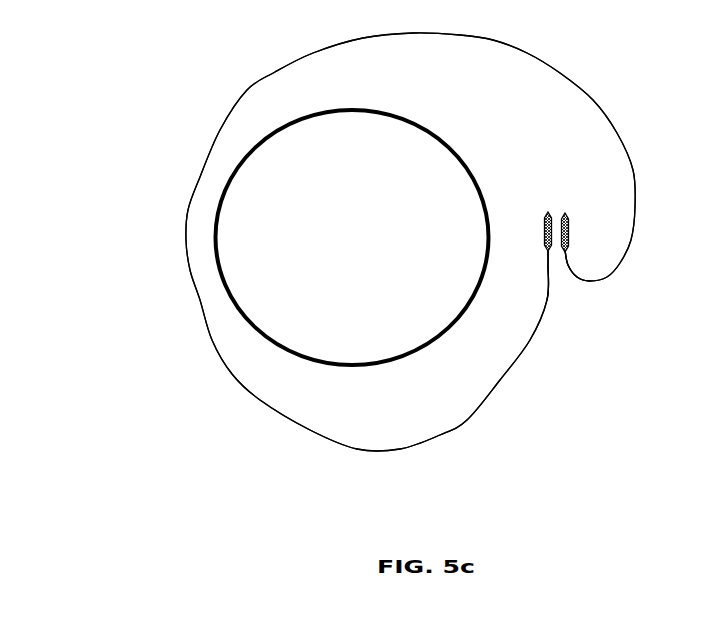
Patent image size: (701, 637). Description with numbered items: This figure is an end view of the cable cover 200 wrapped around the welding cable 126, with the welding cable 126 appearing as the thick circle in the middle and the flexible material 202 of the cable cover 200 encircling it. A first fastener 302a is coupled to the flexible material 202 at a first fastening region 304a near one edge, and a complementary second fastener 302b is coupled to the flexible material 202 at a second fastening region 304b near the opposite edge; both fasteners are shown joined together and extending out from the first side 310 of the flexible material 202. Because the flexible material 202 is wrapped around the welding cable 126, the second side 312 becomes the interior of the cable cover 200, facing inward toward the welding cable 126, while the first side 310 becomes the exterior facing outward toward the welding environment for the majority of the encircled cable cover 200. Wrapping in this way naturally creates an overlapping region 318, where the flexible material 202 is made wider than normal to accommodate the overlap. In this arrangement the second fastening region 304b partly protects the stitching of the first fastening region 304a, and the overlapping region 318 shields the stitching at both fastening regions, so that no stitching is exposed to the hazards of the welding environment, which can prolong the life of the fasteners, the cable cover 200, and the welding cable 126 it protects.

The cable cover 200 is at (178, 156).
The welding cable 126 is at (352, 237).
The first side 310 is at (247, 88).
The second side 312 is at (360, 447).
The flexible material 202 is at (232, 374).
The overlapping region 318 is at (640, 247).
The first fastener 302a is at (543, 232).
The second fastener 302b is at (570, 235).
The first fastening region 304a is at (538, 243).
The second fastening region 304b is at (583, 247).